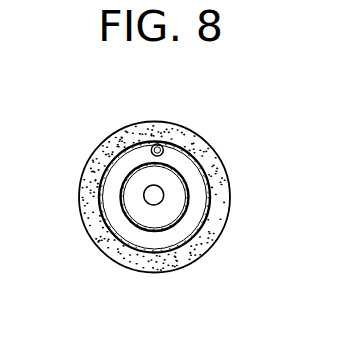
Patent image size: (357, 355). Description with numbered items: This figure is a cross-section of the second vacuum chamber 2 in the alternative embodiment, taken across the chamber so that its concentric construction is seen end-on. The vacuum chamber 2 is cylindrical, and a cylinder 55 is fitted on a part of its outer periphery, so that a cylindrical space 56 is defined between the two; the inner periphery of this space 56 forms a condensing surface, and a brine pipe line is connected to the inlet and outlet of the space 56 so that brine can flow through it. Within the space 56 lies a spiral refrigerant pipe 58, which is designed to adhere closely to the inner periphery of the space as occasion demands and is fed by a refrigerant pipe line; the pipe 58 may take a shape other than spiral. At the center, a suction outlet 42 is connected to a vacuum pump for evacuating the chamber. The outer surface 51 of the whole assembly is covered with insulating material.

The vacuum chamber 2 is at (173, 177).
The suction outlet 42 is at (164, 196).
The outer casing 51 is at (137, 126).
The cylinder 55 is at (152, 253).
The cylindrical space 56 is at (113, 213).
The spiral refrigerant pipe 58 is at (158, 143).